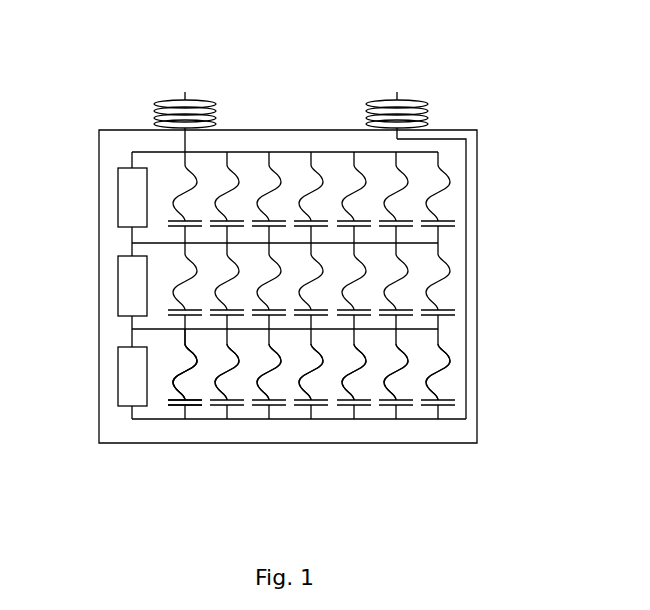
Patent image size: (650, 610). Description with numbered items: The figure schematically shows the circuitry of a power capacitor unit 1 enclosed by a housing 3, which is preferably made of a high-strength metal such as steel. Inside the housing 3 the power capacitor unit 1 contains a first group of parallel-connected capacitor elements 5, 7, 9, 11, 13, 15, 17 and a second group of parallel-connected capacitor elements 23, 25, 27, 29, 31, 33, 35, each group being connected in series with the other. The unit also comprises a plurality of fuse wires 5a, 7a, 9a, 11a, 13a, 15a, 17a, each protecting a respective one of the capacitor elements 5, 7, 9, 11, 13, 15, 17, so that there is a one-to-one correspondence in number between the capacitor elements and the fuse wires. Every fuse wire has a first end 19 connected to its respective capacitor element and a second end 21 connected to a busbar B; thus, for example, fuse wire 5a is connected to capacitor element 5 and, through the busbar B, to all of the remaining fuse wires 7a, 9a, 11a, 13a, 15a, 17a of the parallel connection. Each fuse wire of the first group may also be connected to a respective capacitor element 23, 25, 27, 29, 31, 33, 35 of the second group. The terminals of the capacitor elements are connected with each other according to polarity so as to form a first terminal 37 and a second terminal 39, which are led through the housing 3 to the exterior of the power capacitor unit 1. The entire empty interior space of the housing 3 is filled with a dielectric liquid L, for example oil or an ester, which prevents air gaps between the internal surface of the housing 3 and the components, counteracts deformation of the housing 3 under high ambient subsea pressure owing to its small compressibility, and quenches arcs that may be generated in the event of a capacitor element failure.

The power capacitor unit 1 is at (493, 197).
The housing 3 is at (477, 268).
The capacitor element 5 is at (180, 405).
The fuse wire 5a is at (185, 396).
The capacitor element 7 is at (229, 397).
The fuse wire 7a is at (222, 398).
The capacitor element 9 is at (271, 400).
The fuse wire 9a is at (268, 402).
The capacitor element 11 is at (316, 401).
The fuse wire 11a is at (312, 402).
The capacitor element 13 is at (358, 401).
The fuse wire 13a is at (354, 402).
The capacitor element 15 is at (403, 402).
The fuse wire 15a is at (398, 402).
The capacitor element 17 is at (448, 401).
The fuse wire 17a is at (449, 366).
The first end 19 is at (170, 403).
The second end 21 is at (185, 348).
The capacitor element 23 is at (168, 315).
The capacitor element 25 is at (237, 286).
The capacitor element 27 is at (280, 286).
The capacitor element 29 is at (321, 286).
The capacitor element 31 is at (363, 286).
The capacitor element 33 is at (406, 286).
The capacitor element 35 is at (441, 286).
The first terminal 37 is at (208, 82).
The second terminal 39 is at (411, 82).
The busbar B is at (415, 330).
The dielectric liquid L is at (108, 197).